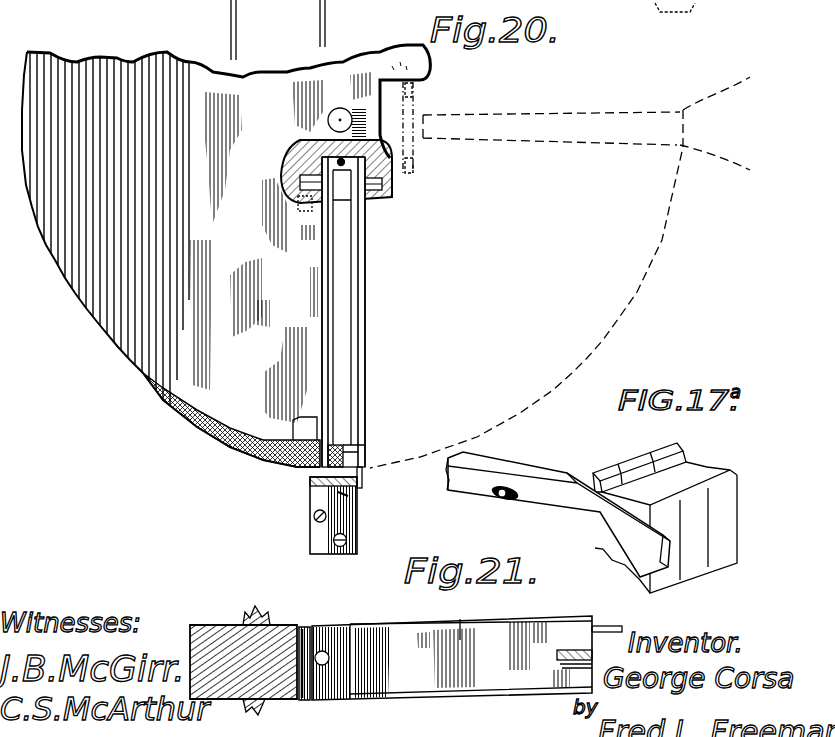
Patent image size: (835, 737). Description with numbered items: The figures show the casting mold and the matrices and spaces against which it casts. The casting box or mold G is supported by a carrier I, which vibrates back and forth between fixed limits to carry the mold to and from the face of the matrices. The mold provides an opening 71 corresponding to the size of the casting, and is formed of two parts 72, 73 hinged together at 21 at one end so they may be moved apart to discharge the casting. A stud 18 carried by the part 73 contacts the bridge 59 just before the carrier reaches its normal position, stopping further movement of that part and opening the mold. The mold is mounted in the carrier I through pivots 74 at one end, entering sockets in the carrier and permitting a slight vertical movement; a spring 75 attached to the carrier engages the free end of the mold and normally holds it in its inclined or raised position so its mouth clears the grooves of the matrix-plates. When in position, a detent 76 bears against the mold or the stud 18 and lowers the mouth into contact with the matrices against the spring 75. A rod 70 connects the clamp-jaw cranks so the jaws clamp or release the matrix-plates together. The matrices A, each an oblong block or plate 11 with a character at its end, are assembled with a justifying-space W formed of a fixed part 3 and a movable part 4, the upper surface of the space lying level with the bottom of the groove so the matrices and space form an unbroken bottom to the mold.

In FIG. 20, the carrier I is at (226, 260).
In FIG. 21, the carrier I is at (243, 656).
In FIG. 20, the casting box or mold G is at (354, 312).
In FIG. 21, the casting box or mold G is at (452, 652).
In FIG. 20, the detent 76 is at (286, 30).
In FIG. 20, the rod 70 is at (415, 105).
In FIG. 20, the pivots 74 is at (300, 181).
In FIG. 21, the pivots 74 is at (326, 651).
In FIG. 20, the hinge 21 is at (328, 141).
In FIG. 21, the hinge 21 is at (301, 632).
In FIG. 20, the mold part 72 is at (323, 261).
In FIG. 21, the mold part 72 is at (490, 641).
In FIG. 20, the mold part 73 is at (358, 262).
In FIG. 20, the opening 71 is at (342, 307).
In FIG. 20, the spring 75 is at (336, 447).
In FIG. 21, the spring 75 is at (574, 651).
In FIG. 20, the bridge 59 is at (310, 481).
In FIG. 20, the stud 18 is at (365, 481).
In FIG. 21, the stud 18 is at (602, 626).
In FIG. 17A, the matrices A is at (665, 510).
In FIG. 17A, the justifying-space W is at (582, 533).
In FIG. 17A, the fixed part of space 3 is at (570, 493).
In FIG. 17A, the movable part of space 4 is at (622, 533).
In FIG. 17A, the oblong block or plate 11 is at (694, 514).